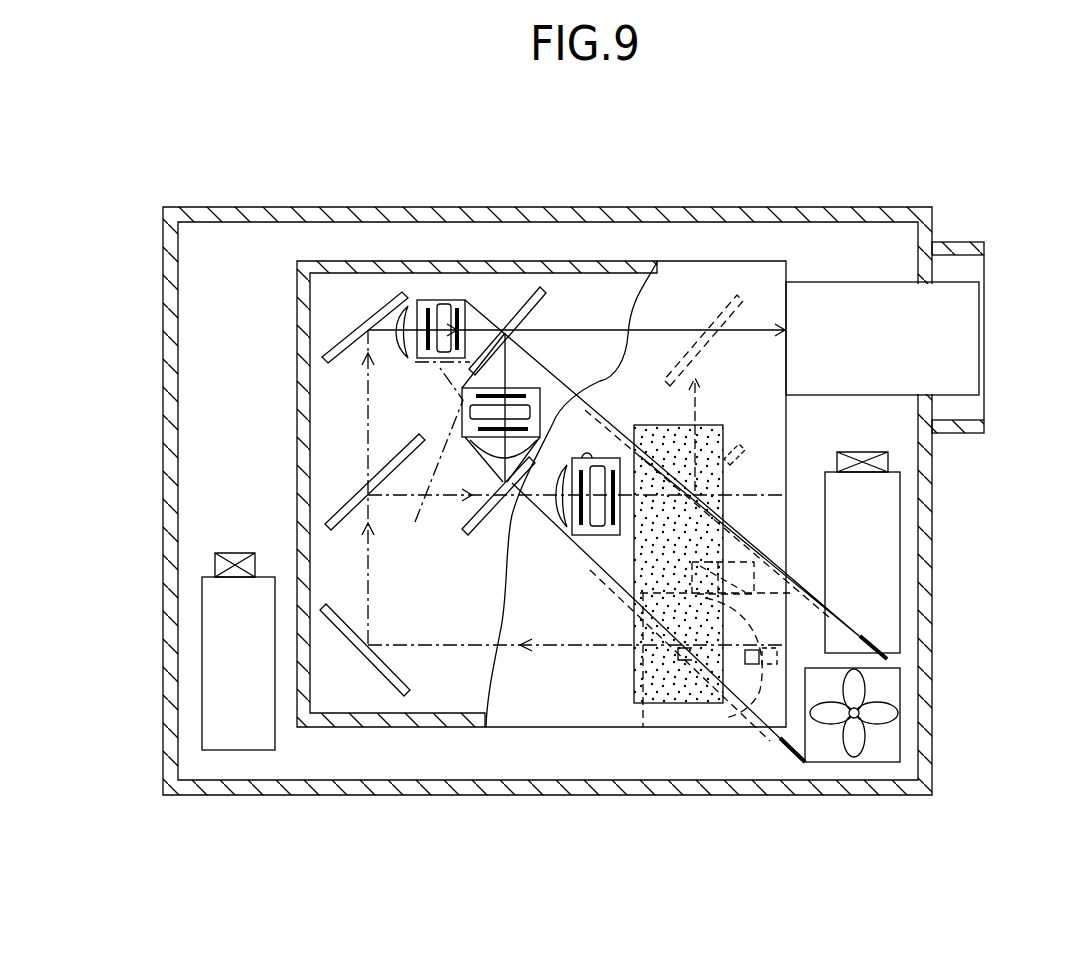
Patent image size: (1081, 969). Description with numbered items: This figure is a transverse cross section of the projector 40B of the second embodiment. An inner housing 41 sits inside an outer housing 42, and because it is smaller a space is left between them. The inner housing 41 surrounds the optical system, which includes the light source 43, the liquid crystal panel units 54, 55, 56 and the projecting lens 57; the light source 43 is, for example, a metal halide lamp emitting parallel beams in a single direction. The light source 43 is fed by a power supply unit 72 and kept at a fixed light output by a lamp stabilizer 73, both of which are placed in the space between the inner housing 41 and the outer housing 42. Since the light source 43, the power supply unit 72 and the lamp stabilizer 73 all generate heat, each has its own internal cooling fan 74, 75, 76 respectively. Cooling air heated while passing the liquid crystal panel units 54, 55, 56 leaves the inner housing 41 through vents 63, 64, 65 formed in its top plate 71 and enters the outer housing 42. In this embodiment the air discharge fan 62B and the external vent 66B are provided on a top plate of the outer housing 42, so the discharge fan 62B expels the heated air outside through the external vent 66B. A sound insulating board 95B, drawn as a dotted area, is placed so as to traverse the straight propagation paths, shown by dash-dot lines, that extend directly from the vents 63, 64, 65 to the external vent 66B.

The projector 40B is at (810, 105).
The inner housing 41 is at (406, 740).
The outer housing 42 is at (348, 807).
The light source 43 is at (733, 600).
The liquid crystal panel unit 54 is at (447, 290).
The liquid crystal panel unit 55 is at (552, 390).
The liquid crystal panel unit 56 is at (603, 537).
The projecting lens 57 is at (963, 330).
The air discharge fan 62B is at (882, 740).
The vent 63 is at (420, 300).
The vent 64 is at (553, 491).
The vent 65 is at (582, 458).
The external vent 66B is at (898, 730).
The top plate 71 is at (576, 690).
The power supply unit 72 is at (233, 730).
The lamp stabilizer 73 is at (878, 550).
The internal cooling fan 74 is at (787, 541).
The internal cooling fan 75 is at (215, 560).
The internal cooling fan 76 is at (888, 458).
The sound insulating board 95B is at (667, 690).